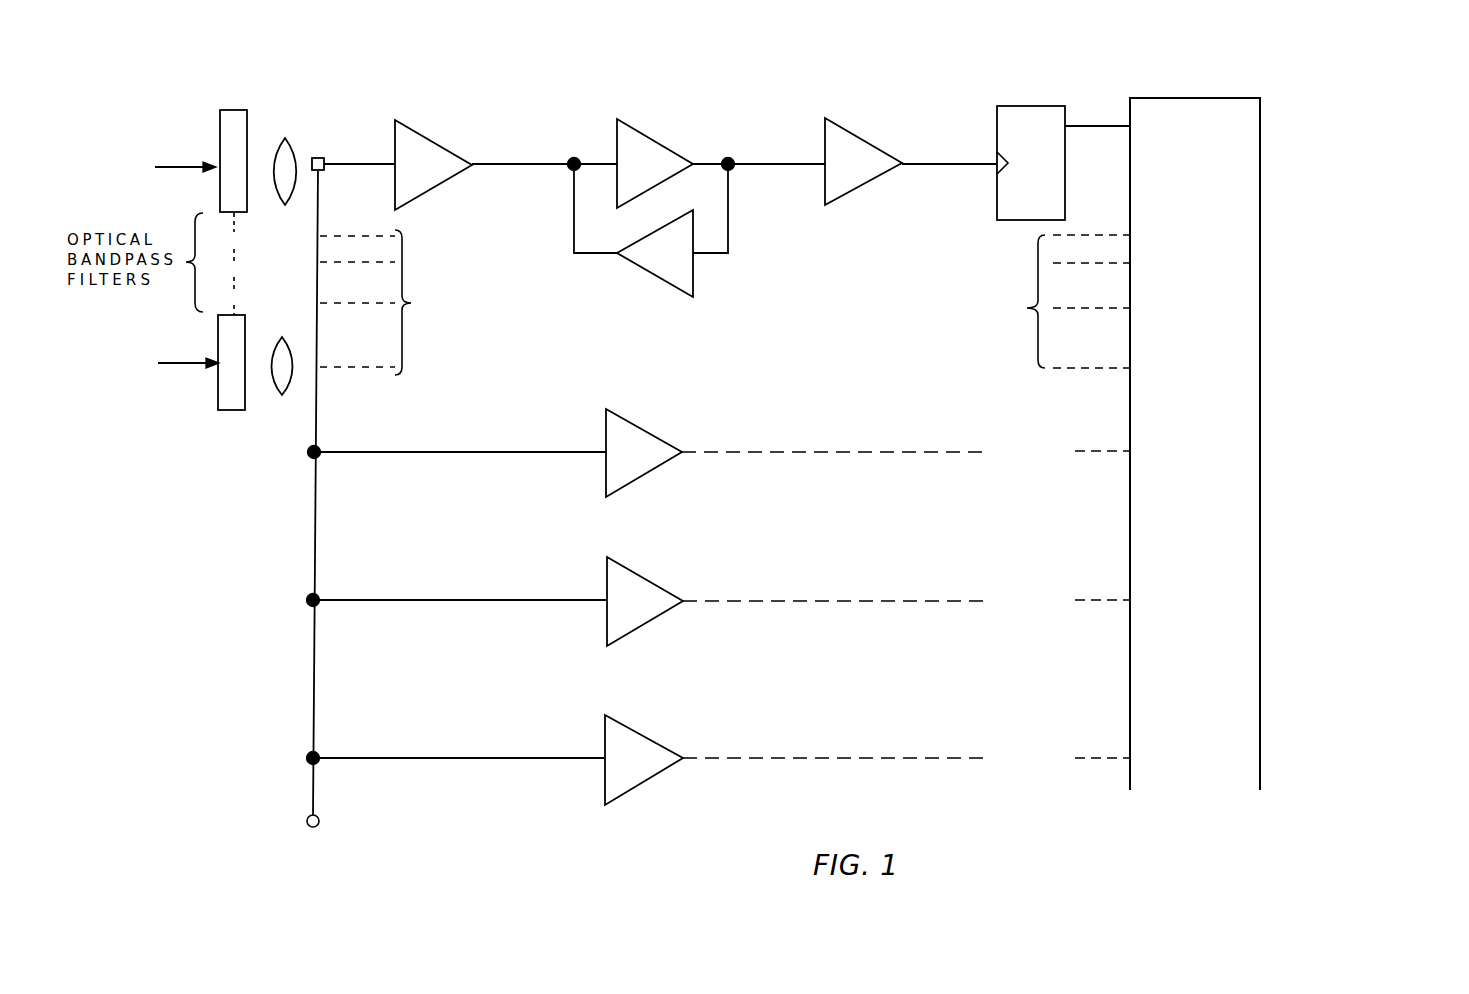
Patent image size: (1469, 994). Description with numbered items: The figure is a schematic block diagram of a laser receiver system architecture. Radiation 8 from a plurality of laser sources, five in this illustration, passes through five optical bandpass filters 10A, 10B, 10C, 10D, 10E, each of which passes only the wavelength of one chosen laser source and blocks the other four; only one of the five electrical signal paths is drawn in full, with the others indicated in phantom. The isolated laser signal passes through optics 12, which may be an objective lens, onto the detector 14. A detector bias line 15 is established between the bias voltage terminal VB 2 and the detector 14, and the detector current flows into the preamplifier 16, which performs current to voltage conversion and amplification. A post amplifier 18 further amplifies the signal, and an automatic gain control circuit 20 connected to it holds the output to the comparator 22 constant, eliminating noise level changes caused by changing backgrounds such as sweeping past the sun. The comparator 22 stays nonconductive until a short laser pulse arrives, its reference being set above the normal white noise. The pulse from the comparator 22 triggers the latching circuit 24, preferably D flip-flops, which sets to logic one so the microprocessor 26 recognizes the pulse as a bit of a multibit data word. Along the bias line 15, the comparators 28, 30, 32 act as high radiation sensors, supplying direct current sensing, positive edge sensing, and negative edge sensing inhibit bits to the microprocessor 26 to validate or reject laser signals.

The bias voltage terminal VB 2 is at (342, 824).
The radiation 8 is at (190, 164).
The optical bandpass filter 10A is at (233, 110).
The optical bandpass filter 10B is at (241, 231).
The optical bandpass filter 10C is at (239, 263).
The optical bandpass filter 10D is at (239, 296).
The optical bandpass filter 10E is at (232, 410).
The optics 12 is at (286, 138).
The detector 14 is at (320, 157).
The detector bias line 15 is at (283, 517).
The preamplifier 16 is at (452, 145).
The post amplifier 18 is at (660, 138).
The automatic gain control circuit 20 is at (656, 278).
The comparator 22 is at (853, 135).
The latching circuit 24 is at (1045, 105).
The microprocessor 26 is at (1190, 97).
The comparator 28 is at (658, 432).
The comparator 30 is at (652, 580).
The comparator 32 is at (655, 738).